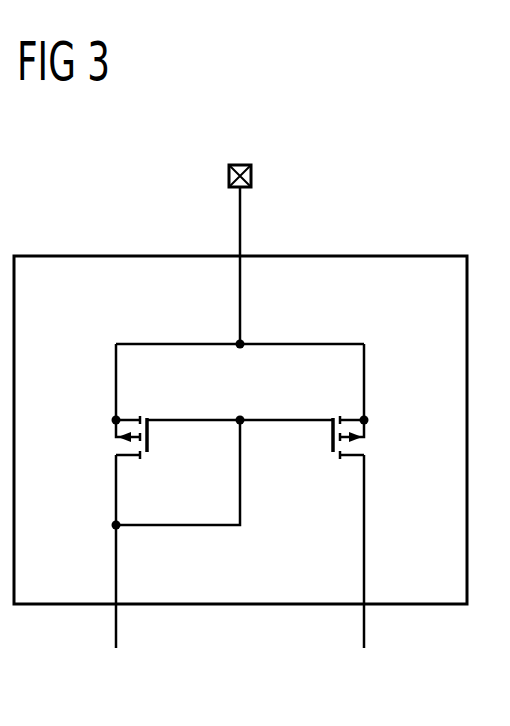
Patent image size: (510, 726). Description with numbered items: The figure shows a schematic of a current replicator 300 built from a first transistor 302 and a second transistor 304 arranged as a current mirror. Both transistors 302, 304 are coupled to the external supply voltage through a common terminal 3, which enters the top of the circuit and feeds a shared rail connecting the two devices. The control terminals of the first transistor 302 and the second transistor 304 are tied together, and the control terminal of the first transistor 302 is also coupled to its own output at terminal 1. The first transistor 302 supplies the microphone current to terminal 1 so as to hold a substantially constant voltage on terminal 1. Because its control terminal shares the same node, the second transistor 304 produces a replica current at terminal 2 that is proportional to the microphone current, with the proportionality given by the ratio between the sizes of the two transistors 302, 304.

The current replicator 300 is at (394, 156).
The first transistor 302 is at (149, 432).
The second transistor 304 is at (331, 432).
The terminal 3 is at (253, 265).
The terminal 1 is at (128, 551).
The terminal 2 is at (376, 551).